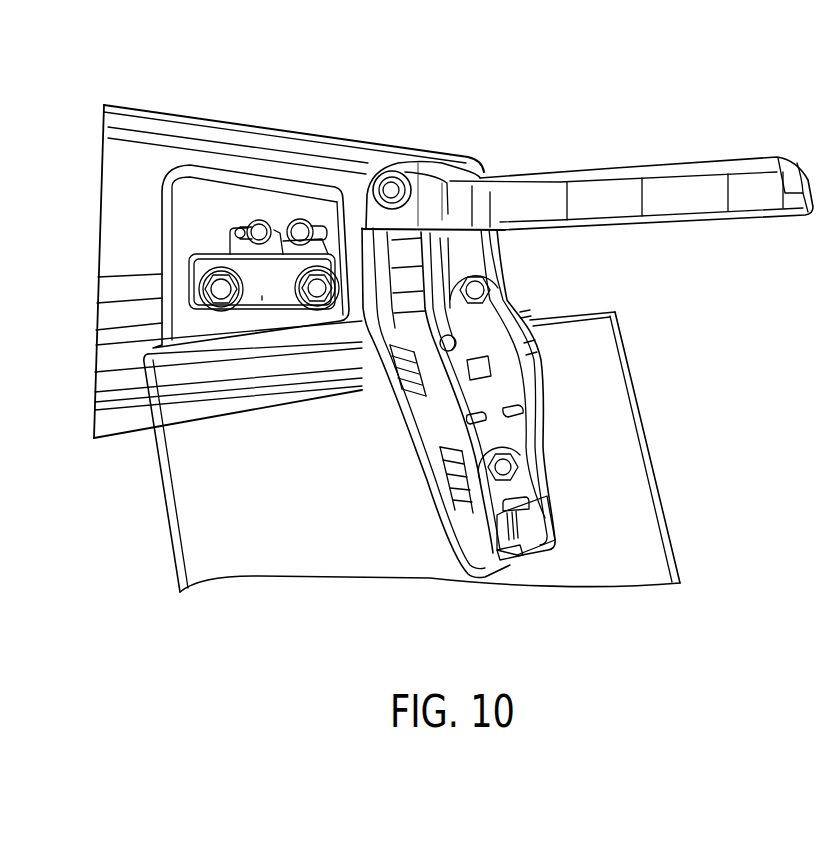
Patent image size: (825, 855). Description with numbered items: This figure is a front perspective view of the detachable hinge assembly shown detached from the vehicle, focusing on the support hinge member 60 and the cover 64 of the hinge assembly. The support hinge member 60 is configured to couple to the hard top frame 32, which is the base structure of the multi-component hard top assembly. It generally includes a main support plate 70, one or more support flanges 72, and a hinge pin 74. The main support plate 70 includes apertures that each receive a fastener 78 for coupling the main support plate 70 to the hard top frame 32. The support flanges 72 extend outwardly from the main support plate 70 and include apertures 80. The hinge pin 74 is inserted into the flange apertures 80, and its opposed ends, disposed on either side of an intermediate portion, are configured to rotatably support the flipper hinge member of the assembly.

The hard top frame 32 is at (143, 123).
The support hinge member 60 is at (206, 233).
The cover 64 is at (578, 176).
The main support plate 70 is at (262, 296).
The support flange 72 is at (264, 224).
The hinge pin 74 is at (335, 219).
The fastener 78 is at (220, 295).
The aperture 80 is at (245, 228).